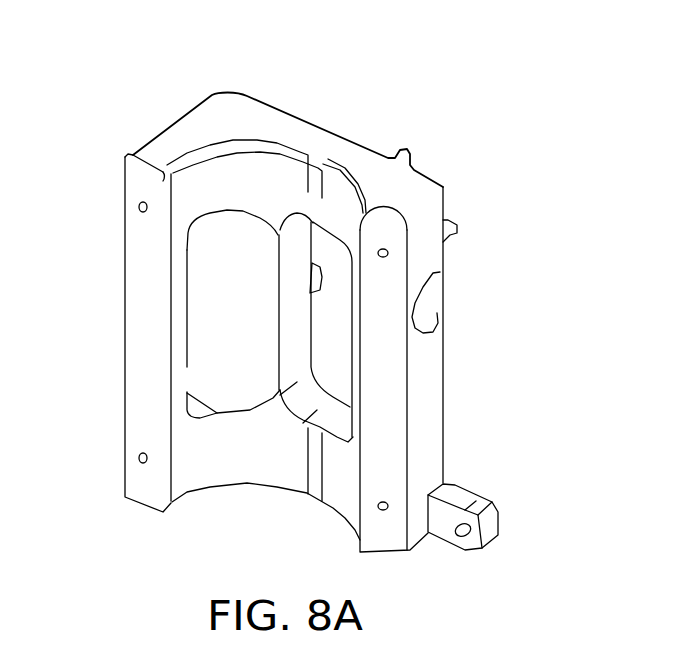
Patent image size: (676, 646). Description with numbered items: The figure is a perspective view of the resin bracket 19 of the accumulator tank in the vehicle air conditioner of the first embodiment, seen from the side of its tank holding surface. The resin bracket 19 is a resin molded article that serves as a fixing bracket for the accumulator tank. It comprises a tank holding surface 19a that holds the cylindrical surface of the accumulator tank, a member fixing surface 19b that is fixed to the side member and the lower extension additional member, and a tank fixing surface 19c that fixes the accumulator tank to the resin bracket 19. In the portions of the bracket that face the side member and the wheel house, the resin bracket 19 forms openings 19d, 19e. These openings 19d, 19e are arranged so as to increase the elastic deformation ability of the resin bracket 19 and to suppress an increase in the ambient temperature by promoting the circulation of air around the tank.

The resin bracket 19 is at (152, 46).
The tank holding surface 19a is at (273, 462).
The member fixing surface 19b is at (312, 123).
The tank fixing surface 19c is at (152, 290).
The opening 19d is at (295, 327).
The opening 19e is at (187, 368).